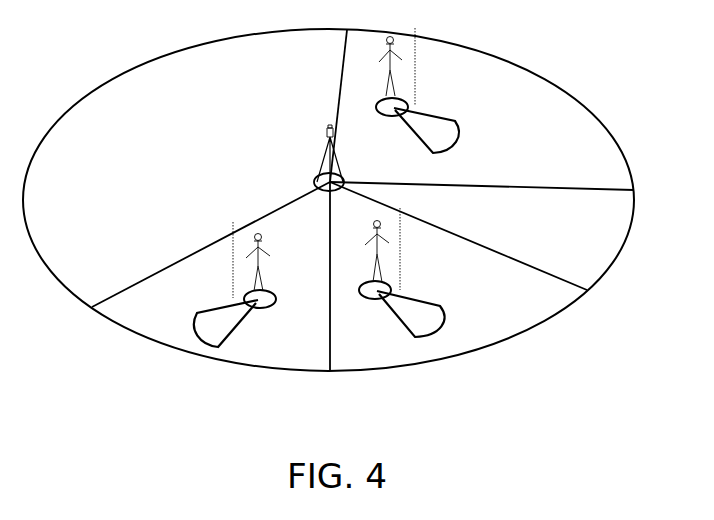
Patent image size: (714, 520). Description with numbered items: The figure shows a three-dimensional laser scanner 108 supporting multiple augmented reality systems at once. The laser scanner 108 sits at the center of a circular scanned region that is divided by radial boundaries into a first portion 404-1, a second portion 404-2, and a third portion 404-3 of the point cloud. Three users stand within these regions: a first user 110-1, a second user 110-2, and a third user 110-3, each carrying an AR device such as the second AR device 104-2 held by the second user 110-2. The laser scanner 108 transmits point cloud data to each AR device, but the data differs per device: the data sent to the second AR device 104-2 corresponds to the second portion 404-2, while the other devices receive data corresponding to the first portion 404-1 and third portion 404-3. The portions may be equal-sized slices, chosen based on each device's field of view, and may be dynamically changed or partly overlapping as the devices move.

The laser scanner 108 is at (326, 141).
The second AR device 104-2 is at (380, 222).
The first user 110-1 is at (252, 257).
The second user 110-2 is at (387, 249).
The third user 110-3 is at (378, 88).
The first portion of the point cloud 404-1 is at (275, 357).
The second portion of the point cloud 404-2 is at (500, 326).
The third portion of the point cloud 404-3 is at (537, 90).